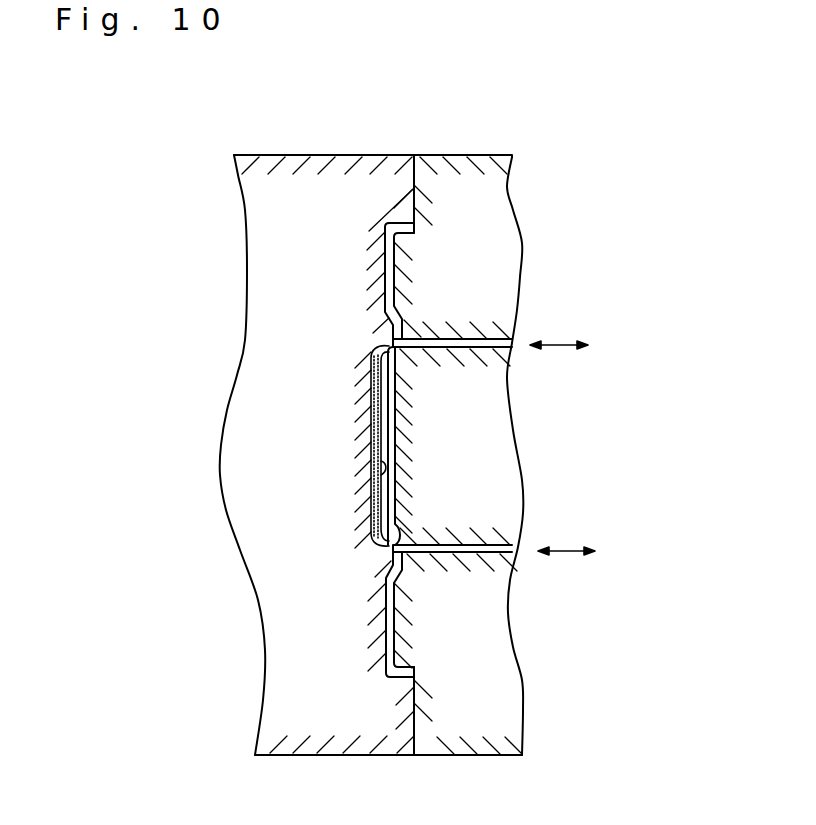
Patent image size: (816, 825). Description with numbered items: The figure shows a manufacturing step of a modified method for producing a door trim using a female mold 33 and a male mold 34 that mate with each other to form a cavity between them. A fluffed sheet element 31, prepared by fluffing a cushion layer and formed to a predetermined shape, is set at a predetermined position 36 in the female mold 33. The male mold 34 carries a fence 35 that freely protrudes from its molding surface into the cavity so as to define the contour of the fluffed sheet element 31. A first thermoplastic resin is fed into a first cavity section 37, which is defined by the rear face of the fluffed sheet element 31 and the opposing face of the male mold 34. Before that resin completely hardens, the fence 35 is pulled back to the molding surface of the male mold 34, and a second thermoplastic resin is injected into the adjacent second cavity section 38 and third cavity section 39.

The fluffed sheet element 31 is at (370, 404).
The female mold 33 is at (337, 182).
The male mold 34 is at (500, 156).
The fence 35 is at (478, 343).
The predetermined position 36 is at (370, 493).
The first cavity section 37 is at (395, 441).
The second cavity section 38 is at (397, 273).
The third cavity section 39 is at (395, 634).